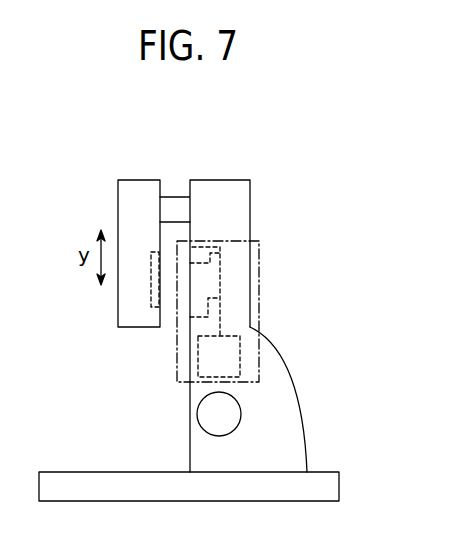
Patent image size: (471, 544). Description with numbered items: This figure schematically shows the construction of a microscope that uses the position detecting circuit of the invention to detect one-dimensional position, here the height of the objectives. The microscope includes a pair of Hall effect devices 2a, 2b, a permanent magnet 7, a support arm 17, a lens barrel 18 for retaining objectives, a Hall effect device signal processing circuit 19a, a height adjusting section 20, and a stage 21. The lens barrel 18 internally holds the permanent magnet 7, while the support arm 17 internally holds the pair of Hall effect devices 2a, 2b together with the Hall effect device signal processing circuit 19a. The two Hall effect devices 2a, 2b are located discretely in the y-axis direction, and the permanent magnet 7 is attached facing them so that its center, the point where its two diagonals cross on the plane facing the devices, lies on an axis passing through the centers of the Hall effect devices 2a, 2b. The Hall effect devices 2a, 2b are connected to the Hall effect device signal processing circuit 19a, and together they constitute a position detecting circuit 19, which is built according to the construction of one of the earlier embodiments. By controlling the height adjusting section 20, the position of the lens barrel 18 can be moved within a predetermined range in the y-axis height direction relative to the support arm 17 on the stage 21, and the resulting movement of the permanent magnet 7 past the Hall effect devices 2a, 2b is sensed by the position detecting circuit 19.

The Hall effect device 2a is at (198, 249).
The Hall effect device 2b is at (198, 298).
The permanent magnet 7 is at (153, 298).
The support arm 17 is at (216, 188).
The lens barrel 18 is at (138, 185).
The position detecting circuit 19 is at (177, 352).
The Hall effect device signal processing circuit 19a is at (236, 356).
The height adjusting section 20 is at (236, 413).
The stage 21 is at (67, 480).